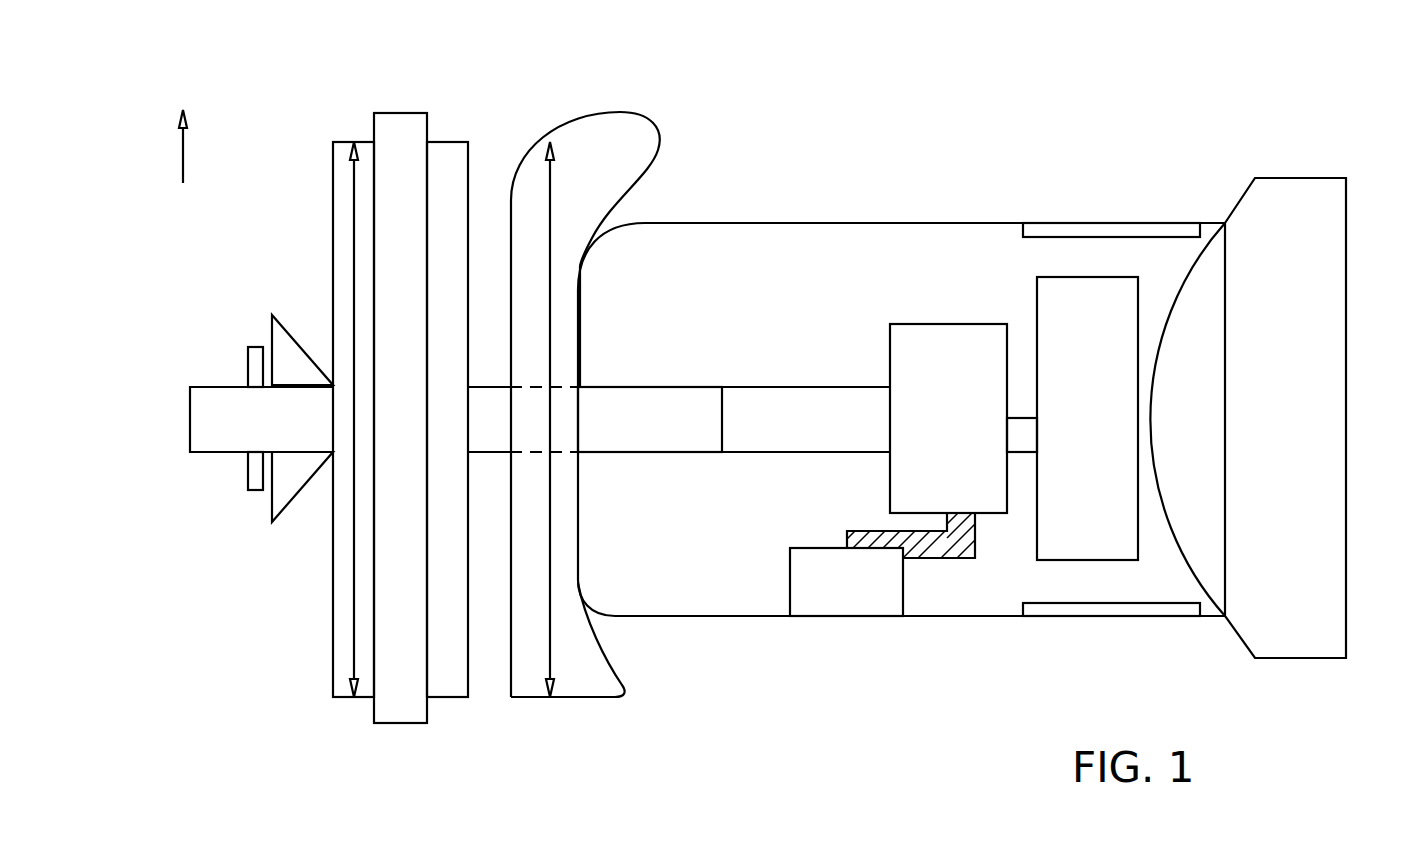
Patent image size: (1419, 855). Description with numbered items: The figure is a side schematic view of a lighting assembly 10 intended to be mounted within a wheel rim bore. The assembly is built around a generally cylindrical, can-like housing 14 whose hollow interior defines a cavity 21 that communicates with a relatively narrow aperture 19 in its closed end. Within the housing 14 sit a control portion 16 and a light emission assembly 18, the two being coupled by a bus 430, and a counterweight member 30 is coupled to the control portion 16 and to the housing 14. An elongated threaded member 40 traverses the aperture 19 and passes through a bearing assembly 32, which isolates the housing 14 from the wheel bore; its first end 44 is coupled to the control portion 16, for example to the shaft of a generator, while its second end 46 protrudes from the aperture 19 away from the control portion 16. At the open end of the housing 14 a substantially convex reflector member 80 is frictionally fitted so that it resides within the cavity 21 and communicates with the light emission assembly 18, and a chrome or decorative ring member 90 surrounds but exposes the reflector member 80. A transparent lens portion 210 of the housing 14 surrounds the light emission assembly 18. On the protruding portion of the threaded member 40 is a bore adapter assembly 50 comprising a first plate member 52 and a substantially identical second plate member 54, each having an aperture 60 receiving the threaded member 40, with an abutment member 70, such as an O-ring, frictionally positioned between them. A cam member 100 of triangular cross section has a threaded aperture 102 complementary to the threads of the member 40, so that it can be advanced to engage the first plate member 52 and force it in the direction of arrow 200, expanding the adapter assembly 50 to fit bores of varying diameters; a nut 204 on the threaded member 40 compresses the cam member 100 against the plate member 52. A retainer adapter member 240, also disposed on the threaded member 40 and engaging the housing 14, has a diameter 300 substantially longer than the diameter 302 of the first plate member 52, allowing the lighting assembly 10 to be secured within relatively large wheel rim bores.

The lighting assembly 10 is at (862, 168).
The housing 14 is at (970, 223).
The control portion 16 is at (928, 505).
The light emission assembly 18 is at (1071, 505).
The aperture 19 is at (582, 386).
The cavity 21 is at (883, 277).
The counterweight member 30 is at (835, 618).
The bearing assembly 32 is at (690, 454).
The threaded member 40 is at (487, 440).
The first end 44 is at (843, 405).
The second end 46 is at (470, 386).
The adapter assembly 50 is at (367, 370).
The first plate member 52 is at (333, 155).
The second plate member 54 is at (440, 142).
The apertures 60 is at (332, 382).
The abutment member 70 is at (374, 113).
The reflector member 80 is at (1175, 435).
The decorative ring member 90 is at (1338, 634).
The cam member 100 is at (268, 330).
The threaded aperture 102 is at (275, 378).
The arrow 200 is at (183, 160).
The nut 204 is at (252, 488).
The lens portion 210 is at (1130, 237).
The retainer adapter member 240 is at (640, 143).
The diameter 300 is at (543, 419).
The diameter 302 is at (352, 573).
The bus 430 is at (1020, 416).